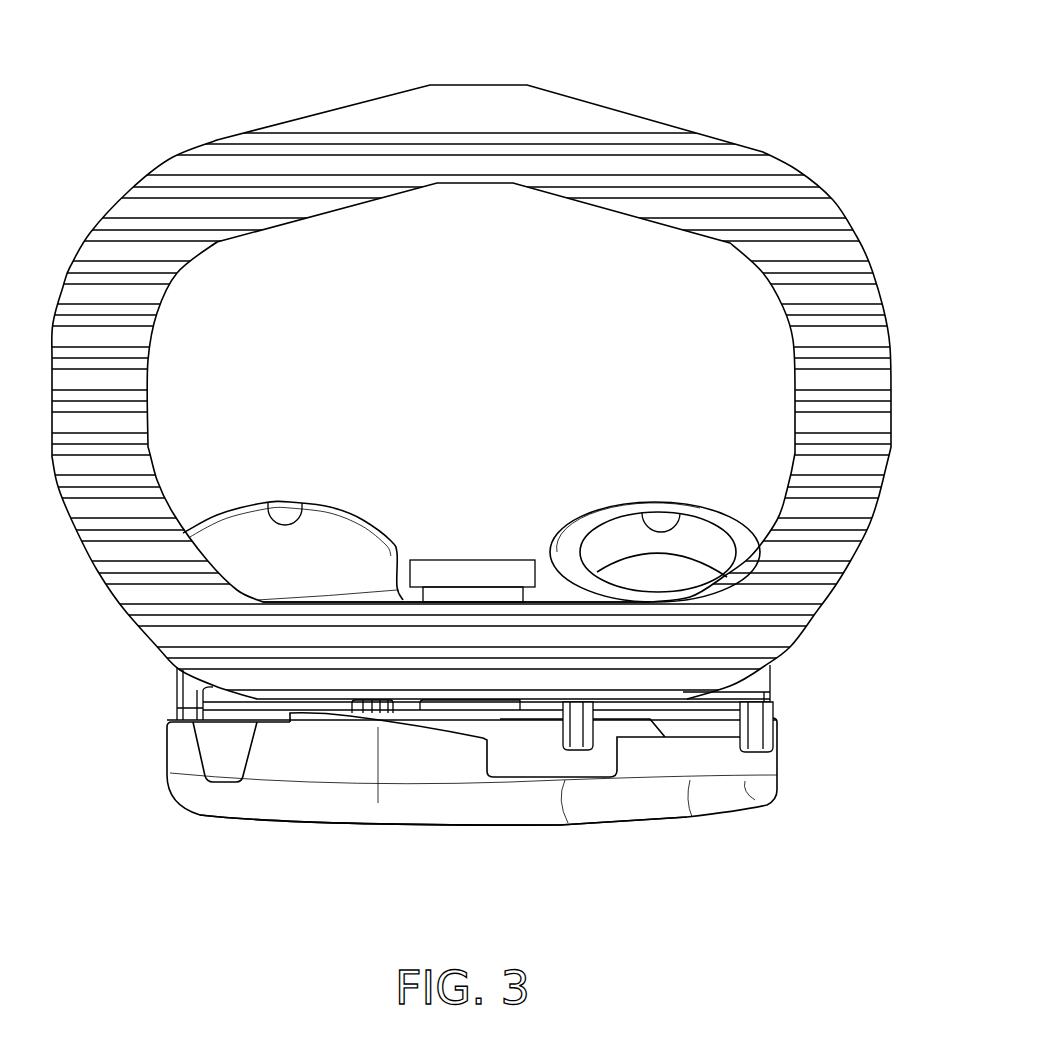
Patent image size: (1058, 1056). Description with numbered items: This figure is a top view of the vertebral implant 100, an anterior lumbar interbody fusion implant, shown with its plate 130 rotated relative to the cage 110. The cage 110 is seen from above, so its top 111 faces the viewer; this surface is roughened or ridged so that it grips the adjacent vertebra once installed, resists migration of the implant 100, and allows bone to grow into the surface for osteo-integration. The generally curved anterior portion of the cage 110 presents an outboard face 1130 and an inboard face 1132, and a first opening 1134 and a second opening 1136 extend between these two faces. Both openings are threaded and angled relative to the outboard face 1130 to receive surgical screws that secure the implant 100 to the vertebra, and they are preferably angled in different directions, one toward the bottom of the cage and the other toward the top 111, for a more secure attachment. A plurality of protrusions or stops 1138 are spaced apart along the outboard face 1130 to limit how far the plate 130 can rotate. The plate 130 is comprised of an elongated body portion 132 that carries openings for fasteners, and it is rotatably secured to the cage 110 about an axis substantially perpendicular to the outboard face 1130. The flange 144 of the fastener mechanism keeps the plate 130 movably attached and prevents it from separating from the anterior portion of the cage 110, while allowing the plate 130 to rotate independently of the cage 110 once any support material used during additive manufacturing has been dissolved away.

The vertebral implant 100 is at (603, 78).
The cage 110 is at (840, 196).
The top 111 is at (865, 337).
The plate 130 is at (155, 768).
The elongated body portion 132 is at (503, 828).
The flange 144 is at (428, 558).
The outboard face 1130 is at (393, 700).
The inboard face 1132 is at (545, 597).
The first opening 1134 is at (270, 506).
The second opening 1136 is at (682, 522).
The protrusions or stops 1138 is at (758, 733).